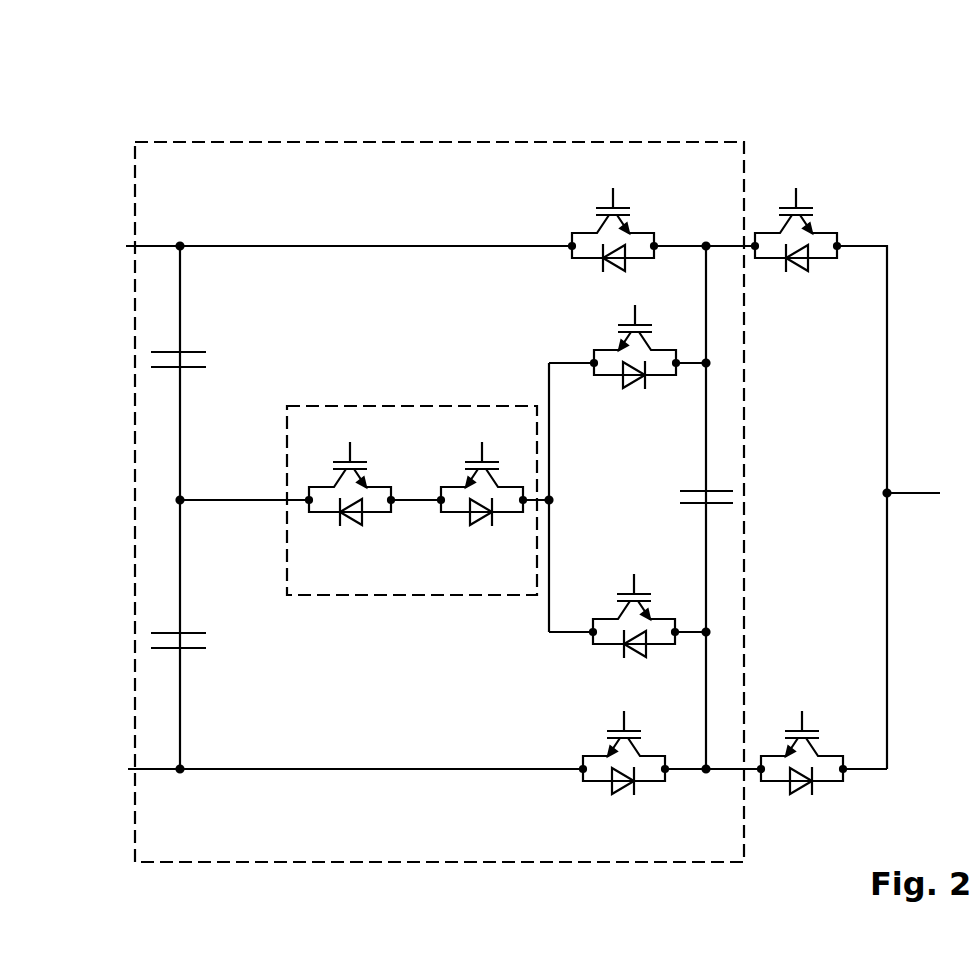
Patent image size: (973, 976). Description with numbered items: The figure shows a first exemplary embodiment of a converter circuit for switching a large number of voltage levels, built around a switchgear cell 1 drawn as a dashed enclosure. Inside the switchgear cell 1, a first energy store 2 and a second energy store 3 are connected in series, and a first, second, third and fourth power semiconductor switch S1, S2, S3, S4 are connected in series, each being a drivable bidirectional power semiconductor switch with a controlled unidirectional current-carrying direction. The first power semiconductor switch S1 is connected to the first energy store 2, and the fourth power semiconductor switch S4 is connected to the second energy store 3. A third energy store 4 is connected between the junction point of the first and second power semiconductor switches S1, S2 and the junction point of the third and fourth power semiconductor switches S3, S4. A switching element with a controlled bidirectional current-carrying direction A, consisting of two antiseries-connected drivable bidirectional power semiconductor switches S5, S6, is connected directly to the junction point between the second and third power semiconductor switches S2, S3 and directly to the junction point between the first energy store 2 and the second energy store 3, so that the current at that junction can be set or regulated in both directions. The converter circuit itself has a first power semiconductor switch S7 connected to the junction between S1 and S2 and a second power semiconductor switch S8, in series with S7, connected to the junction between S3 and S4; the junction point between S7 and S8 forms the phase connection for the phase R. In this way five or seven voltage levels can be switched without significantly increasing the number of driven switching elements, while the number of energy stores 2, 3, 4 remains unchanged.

The switchgear cell 1 is at (352, 141).
The first energy store 2 is at (170, 351).
The second energy store 3 is at (168, 632).
The third energy store 4 is at (722, 490).
The switching element with a controlled bidirectional current-carrying direction A is at (515, 405).
The phase R is at (925, 494).
The first power semiconductor switch S1 is at (627, 225).
The second power semiconductor switch S2 is at (644, 347).
The third power semiconductor switch S3 is at (643, 616).
The fourth power semiconductor switch S4 is at (629, 764).
The drivable bidirectional power semiconductor switch with a controlled unidirection S5 is at (350, 482).
The drivable bidirectional power semiconductor switch with a controlled unidirection S6 is at (484, 481).
The first power semiconductor switch of the converter circuit S7 is at (810, 225).
The second power semiconductor switch of the converter circuit S8 is at (806, 764).